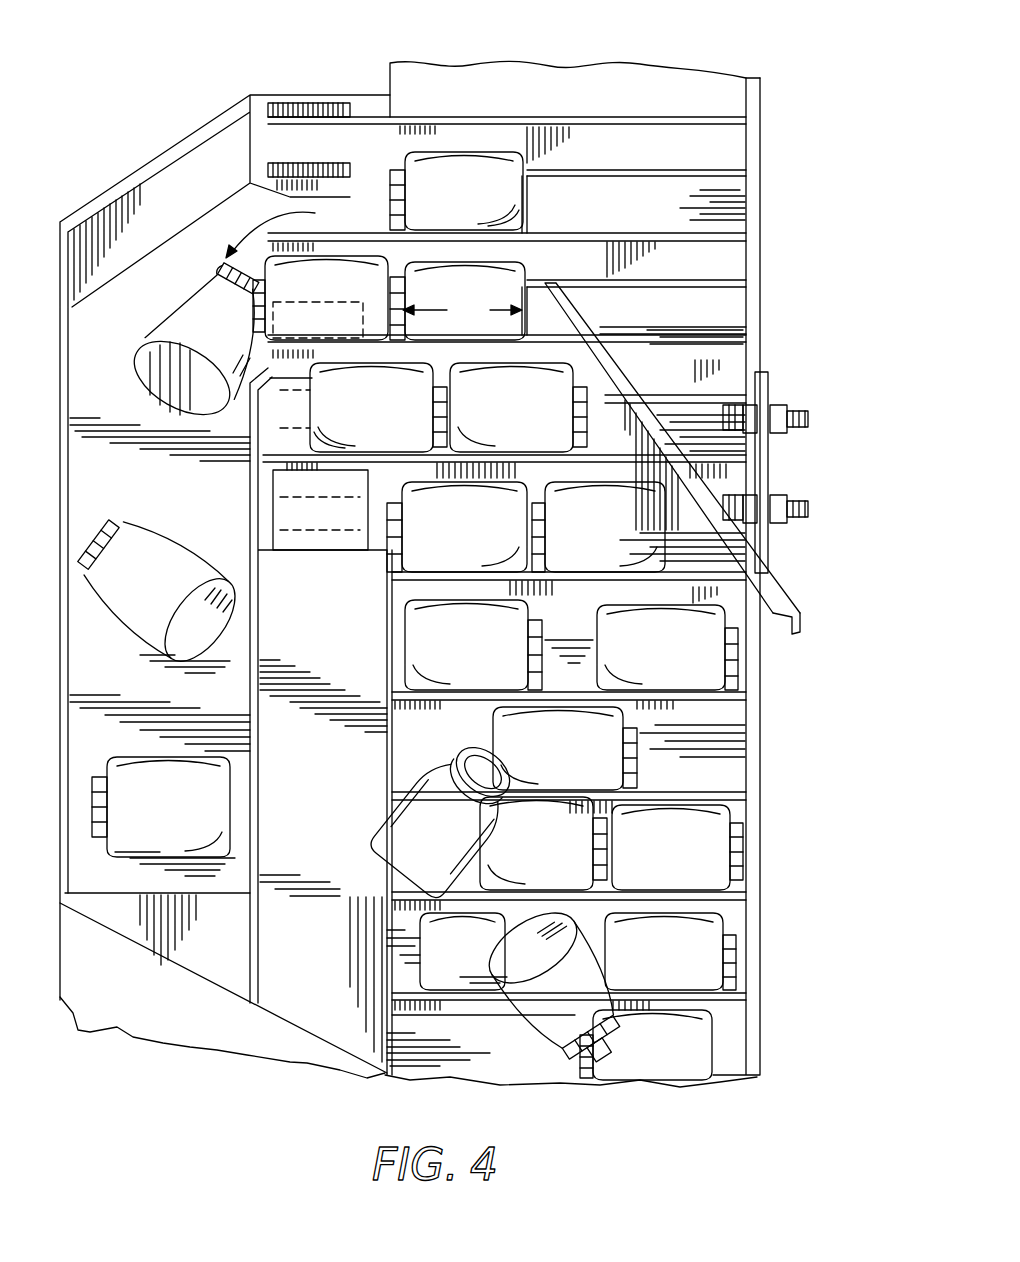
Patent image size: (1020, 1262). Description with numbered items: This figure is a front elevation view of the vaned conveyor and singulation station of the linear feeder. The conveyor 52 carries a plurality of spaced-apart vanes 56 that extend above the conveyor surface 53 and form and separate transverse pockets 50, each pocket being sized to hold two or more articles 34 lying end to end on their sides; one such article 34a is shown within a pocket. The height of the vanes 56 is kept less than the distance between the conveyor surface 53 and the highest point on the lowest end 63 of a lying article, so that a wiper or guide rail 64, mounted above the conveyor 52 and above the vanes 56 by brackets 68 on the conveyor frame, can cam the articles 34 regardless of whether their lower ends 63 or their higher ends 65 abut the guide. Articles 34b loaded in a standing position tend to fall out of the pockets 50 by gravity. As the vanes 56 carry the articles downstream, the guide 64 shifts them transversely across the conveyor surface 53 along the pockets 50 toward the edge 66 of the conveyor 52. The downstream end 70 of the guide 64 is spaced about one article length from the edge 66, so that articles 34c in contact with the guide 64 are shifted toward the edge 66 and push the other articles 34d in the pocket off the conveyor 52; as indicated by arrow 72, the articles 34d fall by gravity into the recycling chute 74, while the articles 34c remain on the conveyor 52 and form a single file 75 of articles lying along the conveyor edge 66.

The articles 34 is at (565, 757).
The container 34a is at (587, 1020).
The standing articles 34b is at (455, 851).
The articles in contact with guide 34c is at (522, 413).
The shifted-off articles 34d is at (240, 334).
The pockets 50 is at (672, 308).
The conveyor 52 is at (762, 270).
The conveyor surface 53 is at (715, 318).
The vanes 56 is at (727, 257).
The lowest end 63 is at (588, 410).
The guide rail 64 is at (773, 590).
The higher end 65 is at (492, 310).
The conveyor edge 66 is at (390, 70).
The brackets 68 is at (770, 453).
The downstream end of guide 70 is at (542, 318).
The arrow 72 is at (262, 215).
The recycling chute 74 is at (90, 228).
The single file 75 is at (455, 185).